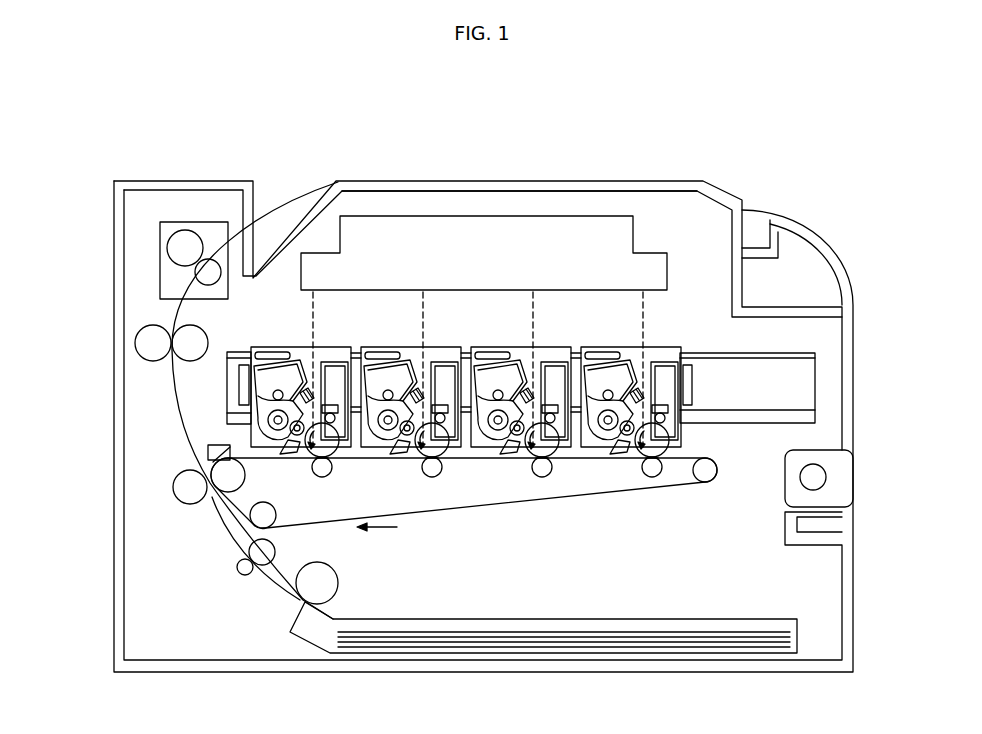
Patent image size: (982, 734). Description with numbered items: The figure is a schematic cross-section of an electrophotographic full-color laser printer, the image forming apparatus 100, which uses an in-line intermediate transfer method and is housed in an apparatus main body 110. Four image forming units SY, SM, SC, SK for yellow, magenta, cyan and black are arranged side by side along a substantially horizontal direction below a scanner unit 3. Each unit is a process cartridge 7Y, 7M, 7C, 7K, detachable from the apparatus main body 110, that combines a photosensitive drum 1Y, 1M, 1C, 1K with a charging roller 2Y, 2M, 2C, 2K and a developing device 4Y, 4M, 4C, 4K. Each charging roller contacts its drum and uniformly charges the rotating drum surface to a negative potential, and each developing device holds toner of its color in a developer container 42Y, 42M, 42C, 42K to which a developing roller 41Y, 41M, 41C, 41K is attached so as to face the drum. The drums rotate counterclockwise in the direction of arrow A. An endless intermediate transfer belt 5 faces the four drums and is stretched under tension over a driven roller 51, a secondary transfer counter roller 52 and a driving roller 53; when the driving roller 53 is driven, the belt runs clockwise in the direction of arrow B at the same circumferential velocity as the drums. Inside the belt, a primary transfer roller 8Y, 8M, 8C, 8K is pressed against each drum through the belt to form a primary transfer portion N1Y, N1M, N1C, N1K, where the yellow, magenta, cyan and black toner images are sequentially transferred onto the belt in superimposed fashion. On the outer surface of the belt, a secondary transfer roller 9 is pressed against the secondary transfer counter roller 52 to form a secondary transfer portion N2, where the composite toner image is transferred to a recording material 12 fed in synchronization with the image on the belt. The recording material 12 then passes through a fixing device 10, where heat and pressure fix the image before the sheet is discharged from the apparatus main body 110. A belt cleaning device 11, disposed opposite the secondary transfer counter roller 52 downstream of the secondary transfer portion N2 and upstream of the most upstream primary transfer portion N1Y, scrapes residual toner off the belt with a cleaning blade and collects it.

The image forming apparatus 100 is at (601, 160).
The apparatus main body 110 is at (472, 178).
The fixing device 10 is at (208, 232).
The scanner unit 3 is at (573, 250).
The first image forming unit SY is at (268, 326).
The second image forming unit SM is at (411, 375).
The third image forming unit SC is at (521, 375).
The fourth image forming unit SK is at (631, 375).
The developing device 4Y is at (290, 352).
The developing device 4M is at (395, 351).
The developing device 4C is at (505, 351).
The developing device 4K is at (615, 351).
The developer container 42Y is at (254, 366).
The developer container 42M is at (370, 310).
The developer container 42C is at (481, 310).
The developer container 42K is at (591, 310).
The process cartridge 7Y is at (326, 369).
The process cartridge 7M is at (437, 369).
The process cartridge 7C is at (547, 369).
The process cartridge 7K is at (657, 369).
The charging roller 2Y is at (331, 413).
The charging roller 2M is at (452, 372).
The charging roller 2C is at (561, 372).
The charging roller 2K is at (671, 372).
The photosensitive drum 1Y is at (334, 456).
The photosensitive drum 1M is at (443, 479).
The photosensitive drum 1C is at (555, 479).
The photosensitive drum 1K is at (664, 479).
The developing roller 41Y is at (286, 448).
The developing roller 41M is at (383, 464).
The developing roller 41C is at (495, 467).
The developing roller 41K is at (606, 467).
The primary transfer roller 8Y is at (322, 478).
The primary transfer roller 8M is at (437, 510).
The primary transfer roller 8C is at (549, 511).
The primary transfer roller 8K is at (659, 510).
The primary transfer portion N1Y is at (314, 460).
The primary transfer portion N1M is at (412, 483).
The primary transfer portion N1C is at (525, 494).
The primary transfer portion N1K is at (633, 493).
The intermediate transfer belt 5 is at (483, 505).
The driven roller 51 is at (268, 518).
The secondary transfer counter roller 52 is at (205, 468).
The driving roller 53 is at (708, 470).
The secondary transfer roller 9 is at (188, 488).
The secondary transfer portion N2 is at (210, 497).
The belt cleaning device 11 is at (220, 445).
The direction of belt travel B is at (377, 538).
The recording material 12 is at (455, 645).